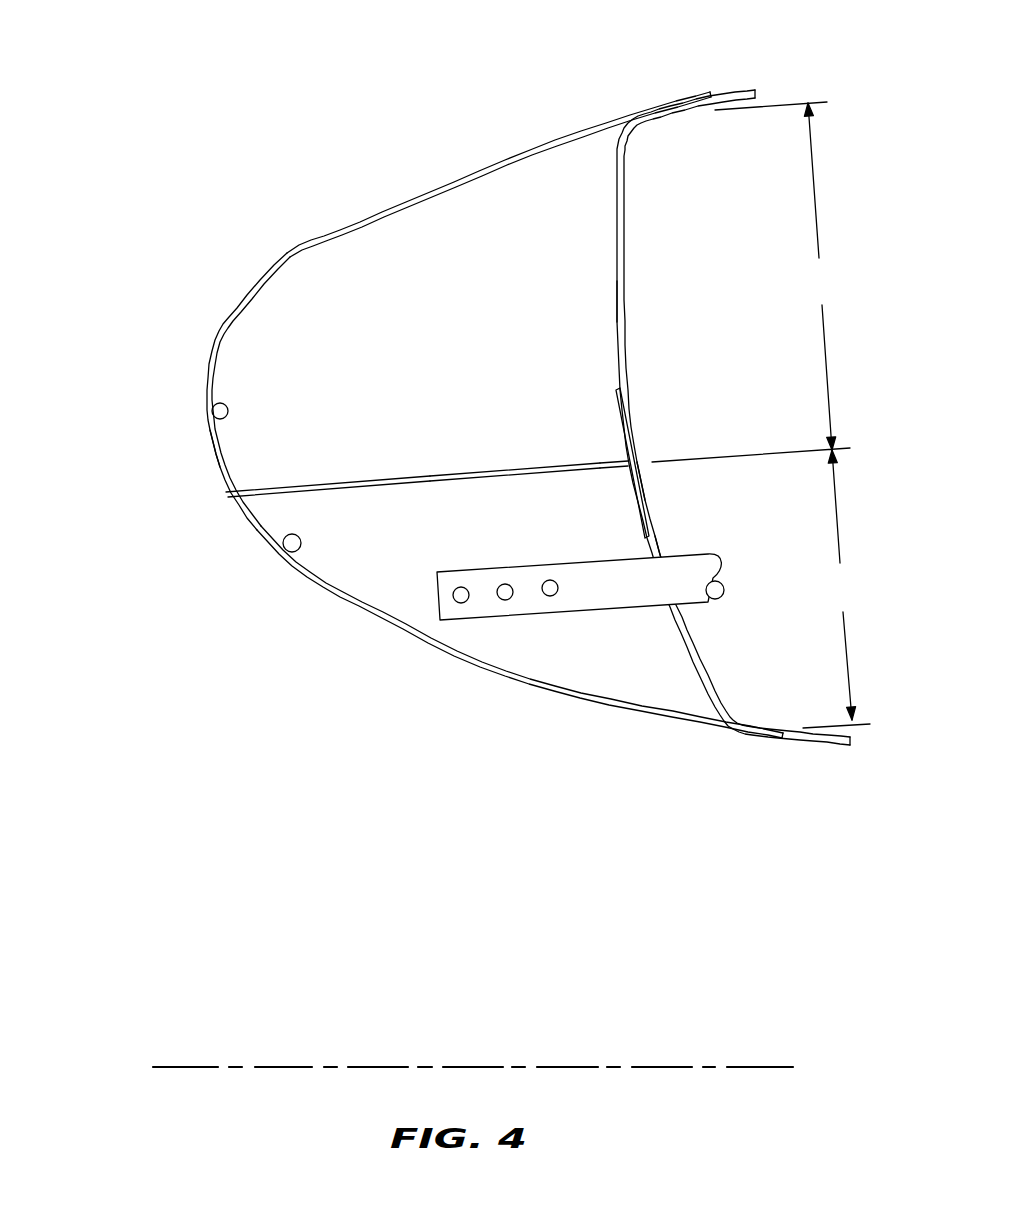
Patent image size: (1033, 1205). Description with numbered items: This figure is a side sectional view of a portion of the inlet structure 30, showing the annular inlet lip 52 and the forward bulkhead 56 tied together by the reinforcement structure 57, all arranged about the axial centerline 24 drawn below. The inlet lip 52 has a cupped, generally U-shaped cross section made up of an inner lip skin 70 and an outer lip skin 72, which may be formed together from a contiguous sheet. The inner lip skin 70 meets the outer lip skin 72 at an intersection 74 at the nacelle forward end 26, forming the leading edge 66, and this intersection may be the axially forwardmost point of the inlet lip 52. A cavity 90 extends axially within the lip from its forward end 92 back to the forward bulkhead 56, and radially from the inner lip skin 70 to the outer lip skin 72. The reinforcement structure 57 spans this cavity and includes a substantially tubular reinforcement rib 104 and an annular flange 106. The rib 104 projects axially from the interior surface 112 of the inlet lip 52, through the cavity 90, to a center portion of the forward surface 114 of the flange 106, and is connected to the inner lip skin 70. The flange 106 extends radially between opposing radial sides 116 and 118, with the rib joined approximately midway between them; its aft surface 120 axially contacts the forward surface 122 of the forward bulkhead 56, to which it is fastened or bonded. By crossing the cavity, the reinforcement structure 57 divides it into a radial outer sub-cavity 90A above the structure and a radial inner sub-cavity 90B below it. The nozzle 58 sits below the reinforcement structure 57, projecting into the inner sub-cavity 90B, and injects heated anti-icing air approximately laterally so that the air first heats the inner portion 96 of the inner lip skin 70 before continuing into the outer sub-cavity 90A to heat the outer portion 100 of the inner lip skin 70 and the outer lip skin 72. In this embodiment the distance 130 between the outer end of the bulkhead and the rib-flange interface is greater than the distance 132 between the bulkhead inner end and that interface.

The inlet structure 30 is at (315, 92).
The outer lip skin 72 is at (343, 228).
The inlet lip 52 is at (284, 258).
The forward bulkhead 56 is at (622, 222).
The outer sub-cavity 90A is at (398, 303).
The forward surface of the forward bulkhead 122 is at (612, 308).
The distance 130 is at (751, 282).
The annular flange 106 is at (618, 432).
The radial side of the flange 118 is at (627, 364).
The nacelle forward end 26 is at (205, 389).
The leading edge 66 is at (248, 391).
The intersection 74 is at (248, 391).
The forward end of the inlet lip 92 is at (205, 424).
The reinforcement rib 104 is at (376, 478).
The reinforcement structure 57 is at (456, 462).
The outer portion of the inner lip skin 100 is at (185, 451).
The cavity 90 is at (268, 450).
The aft surface of the flange 120 is at (653, 487).
The forward surface of the flange 114 is at (627, 492).
The inner sub-cavity 90B is at (435, 541).
The interior surface of the inlet lip 112 is at (290, 553).
The inner lip skin 70 is at (362, 632).
The inner portion of the inner lip skin 96 is at (431, 676).
The nozzle 58 is at (534, 615).
The radial side of the flange 116 is at (648, 556).
The distance 132 is at (836, 589).
The axial centerline 24 is at (798, 1067).